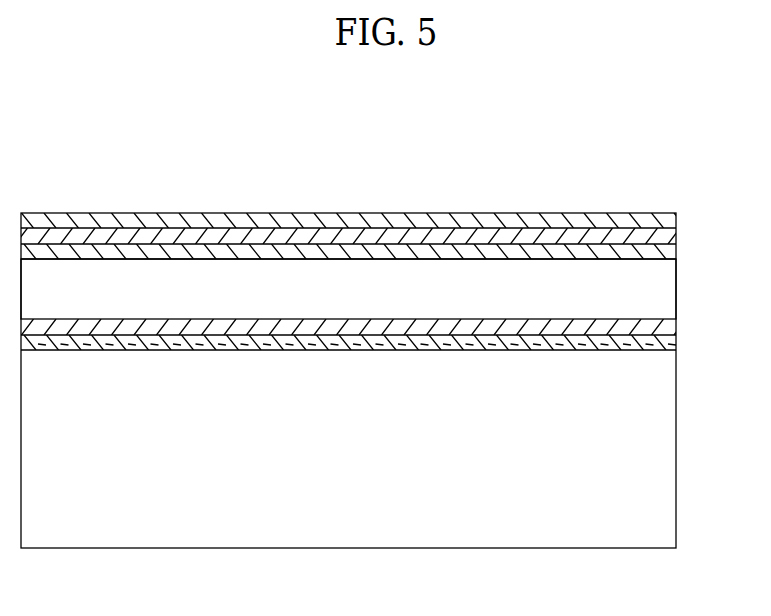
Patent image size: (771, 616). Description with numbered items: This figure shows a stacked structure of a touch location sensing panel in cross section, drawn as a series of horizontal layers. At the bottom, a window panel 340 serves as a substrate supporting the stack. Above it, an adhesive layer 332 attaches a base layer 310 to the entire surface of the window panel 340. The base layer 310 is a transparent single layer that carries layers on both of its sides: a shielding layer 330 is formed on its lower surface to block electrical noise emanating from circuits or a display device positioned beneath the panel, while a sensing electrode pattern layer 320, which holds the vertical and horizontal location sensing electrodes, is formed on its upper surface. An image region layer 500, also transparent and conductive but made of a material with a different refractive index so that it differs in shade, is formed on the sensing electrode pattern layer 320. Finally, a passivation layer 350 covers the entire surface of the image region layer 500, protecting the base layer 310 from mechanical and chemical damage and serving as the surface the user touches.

The passivation layer 350 is at (677, 222).
The image region layer 500 is at (677, 236).
The sensing electrode pattern layer 320 is at (677, 252).
The base layer 310 is at (672, 293).
The shielding layer 330 is at (677, 327).
The adhesive layer 332 is at (677, 343).
The window panel 340 is at (673, 450).